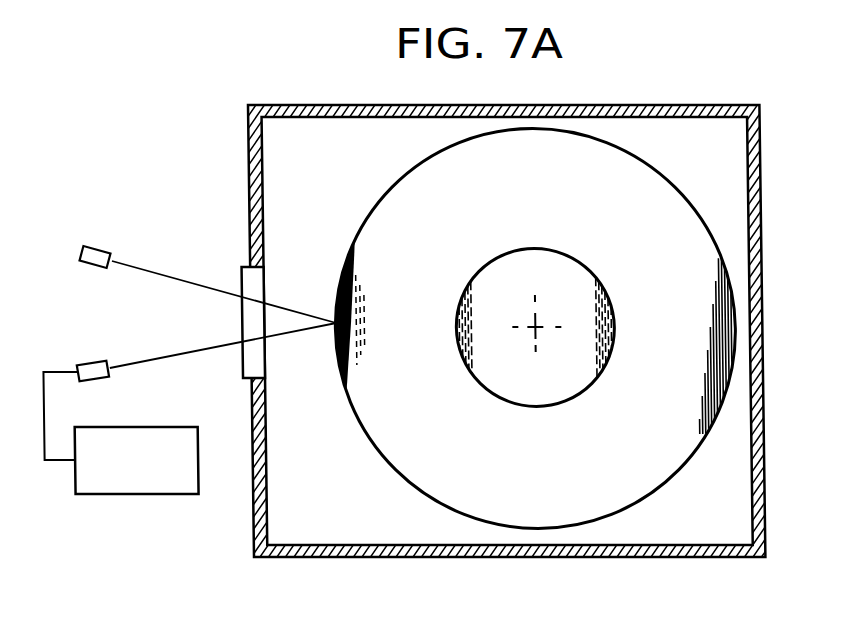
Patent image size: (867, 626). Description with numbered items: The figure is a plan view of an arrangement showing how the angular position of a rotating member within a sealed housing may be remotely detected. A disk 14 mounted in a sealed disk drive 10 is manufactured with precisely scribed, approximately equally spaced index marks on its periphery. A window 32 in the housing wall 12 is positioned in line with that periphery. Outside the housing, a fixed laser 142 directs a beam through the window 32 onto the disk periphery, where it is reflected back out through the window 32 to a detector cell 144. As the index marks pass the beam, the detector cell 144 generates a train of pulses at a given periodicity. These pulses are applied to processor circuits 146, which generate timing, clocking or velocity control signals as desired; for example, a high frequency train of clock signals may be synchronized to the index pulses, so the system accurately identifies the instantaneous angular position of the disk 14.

The sealed disk drive 10 is at (370, 567).
The housing wall 12 is at (247, 510).
The disk 14 is at (620, 510).
The window 32 is at (236, 267).
The fixed laser 142 is at (92, 245).
The detector cell 144 is at (87, 362).
The processor circuits 146 is at (116, 494).